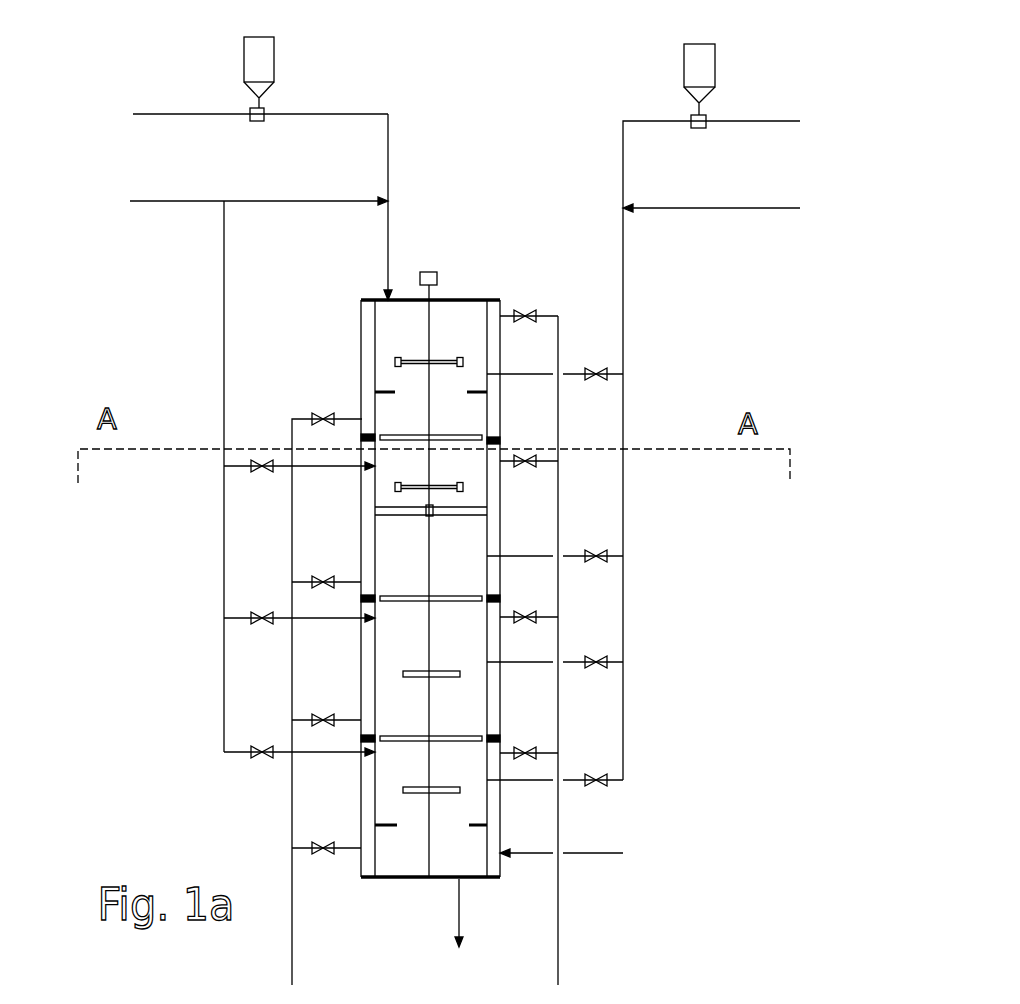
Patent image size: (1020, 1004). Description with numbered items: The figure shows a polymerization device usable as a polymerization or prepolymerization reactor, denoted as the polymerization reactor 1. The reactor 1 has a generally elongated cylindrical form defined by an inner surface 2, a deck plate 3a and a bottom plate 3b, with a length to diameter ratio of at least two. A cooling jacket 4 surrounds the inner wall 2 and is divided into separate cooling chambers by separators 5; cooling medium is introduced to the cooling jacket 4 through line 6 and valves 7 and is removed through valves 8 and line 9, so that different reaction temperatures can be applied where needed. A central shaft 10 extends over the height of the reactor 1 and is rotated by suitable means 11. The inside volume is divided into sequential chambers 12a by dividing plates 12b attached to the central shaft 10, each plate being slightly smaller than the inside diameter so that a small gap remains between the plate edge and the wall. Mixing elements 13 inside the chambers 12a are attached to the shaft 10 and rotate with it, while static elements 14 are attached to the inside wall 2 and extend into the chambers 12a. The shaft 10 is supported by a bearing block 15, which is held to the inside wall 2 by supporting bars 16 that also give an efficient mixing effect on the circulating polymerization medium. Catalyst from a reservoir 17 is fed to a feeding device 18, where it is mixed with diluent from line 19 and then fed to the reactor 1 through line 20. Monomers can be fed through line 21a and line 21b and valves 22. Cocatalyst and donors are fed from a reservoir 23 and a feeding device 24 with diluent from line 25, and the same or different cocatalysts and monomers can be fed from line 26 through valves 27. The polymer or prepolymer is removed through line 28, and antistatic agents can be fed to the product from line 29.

The polymerization reactor 1 is at (521, 168).
The inner surface 2 is at (375, 332).
The deck plate 3a is at (463, 300).
The bottom plate 3b is at (403, 883).
The cooling jacket 4 is at (365, 373).
The separator 5 is at (502, 463).
The cooling medium inlet line 6 is at (293, 933).
The cooling medium inlet valve 7 is at (315, 418).
The cooling medium outlet valve 8 is at (533, 313).
The cooling medium outlet line 9 is at (562, 907).
The central shaft 10 is at (432, 328).
The rotating means 11 is at (430, 268).
The chamber 12a is at (407, 340).
The dividing plate 12b is at (455, 435).
The mixing element 13 is at (395, 362).
The static element 14 is at (380, 390).
The bearing block 15 is at (426, 515).
The supporting bar 16 is at (455, 517).
The catalyst reservoir 17 is at (274, 50).
The feeding device 18 is at (263, 108).
The diluent line 19 is at (213, 112).
The catalyst feed line 20 is at (390, 175).
The monomer feed line 21a is at (203, 198).
The monomer feed line 21b is at (223, 275).
The monomer feed valve 22 is at (260, 460).
The cocatalyst reservoir 23 is at (716, 72).
The feeding device 24 is at (707, 117).
The diluent line 25 is at (797, 116).
The cocatalyst and monomer feed line 26 is at (715, 203).
The feed valve 27 is at (595, 372).
The polymer outlet line 28 is at (463, 902).
The antistatic agent feed line 29 is at (577, 852).